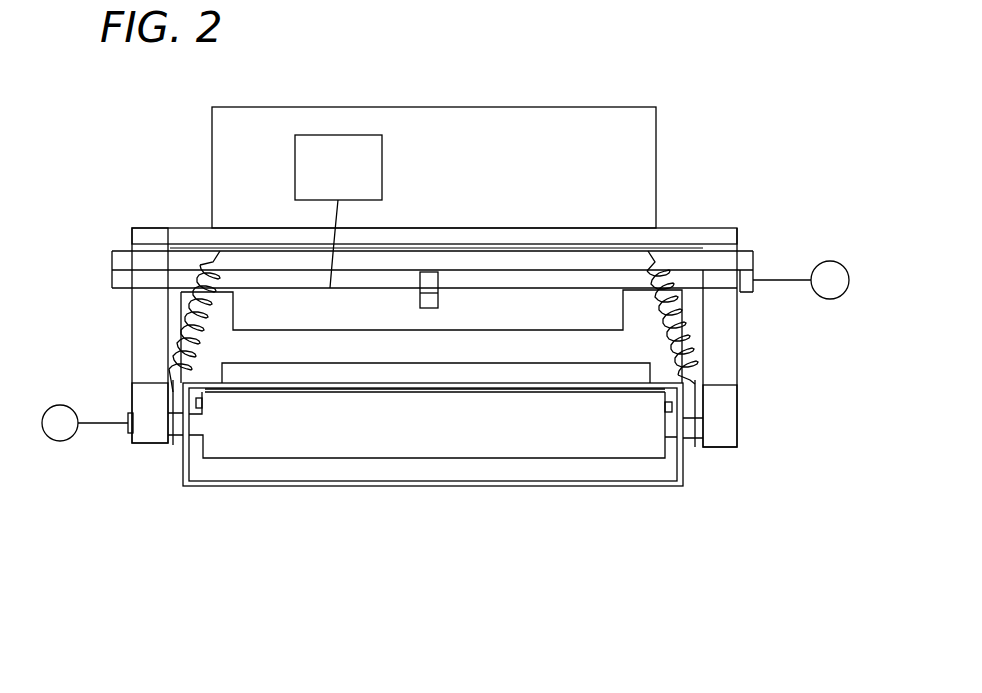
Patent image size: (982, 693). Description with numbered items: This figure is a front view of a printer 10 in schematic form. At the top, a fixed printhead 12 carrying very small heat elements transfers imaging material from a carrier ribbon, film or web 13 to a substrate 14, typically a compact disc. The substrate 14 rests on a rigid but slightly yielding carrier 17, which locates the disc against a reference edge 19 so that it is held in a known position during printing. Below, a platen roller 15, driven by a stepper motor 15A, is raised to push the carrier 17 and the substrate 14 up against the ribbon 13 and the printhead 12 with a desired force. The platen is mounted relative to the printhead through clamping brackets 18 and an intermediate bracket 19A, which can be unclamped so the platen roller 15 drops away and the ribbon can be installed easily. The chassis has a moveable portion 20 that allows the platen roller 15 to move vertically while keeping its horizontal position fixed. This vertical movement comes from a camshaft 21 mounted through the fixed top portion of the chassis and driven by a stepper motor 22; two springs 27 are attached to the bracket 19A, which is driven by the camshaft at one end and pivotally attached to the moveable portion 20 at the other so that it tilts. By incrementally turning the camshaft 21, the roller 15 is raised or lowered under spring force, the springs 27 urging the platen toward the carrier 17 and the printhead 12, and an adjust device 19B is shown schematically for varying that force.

The printer 10 is at (442, 78).
The printhead 12 is at (633, 373).
The carrier ribbon 13 is at (645, 150).
The substrate 14 is at (555, 392).
The platen roller 15 is at (637, 440).
The stepper motor 15A is at (80, 440).
The carrier 17 is at (660, 386).
The brackets 18 is at (143, 362).
The reference edge 19 is at (137, 413).
The bracket 19A is at (730, 405).
The adjust device 19B is at (347, 135).
The moveable portion 20 is at (202, 486).
The camshaft 21 is at (438, 272).
The stepper motor 22 is at (826, 261).
The springs 27 is at (183, 312).